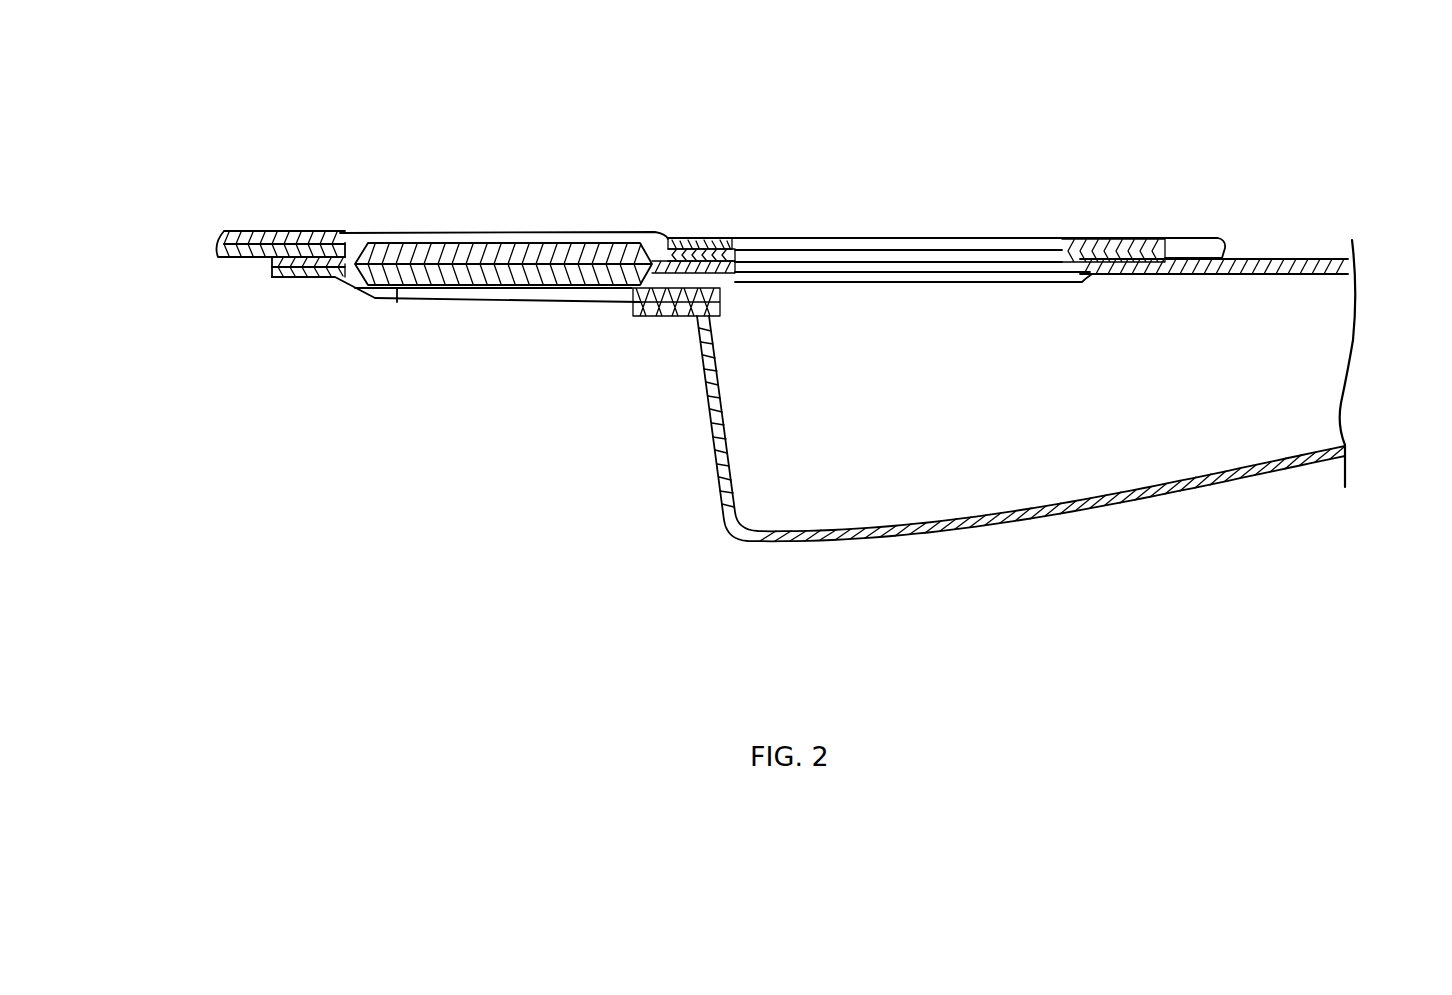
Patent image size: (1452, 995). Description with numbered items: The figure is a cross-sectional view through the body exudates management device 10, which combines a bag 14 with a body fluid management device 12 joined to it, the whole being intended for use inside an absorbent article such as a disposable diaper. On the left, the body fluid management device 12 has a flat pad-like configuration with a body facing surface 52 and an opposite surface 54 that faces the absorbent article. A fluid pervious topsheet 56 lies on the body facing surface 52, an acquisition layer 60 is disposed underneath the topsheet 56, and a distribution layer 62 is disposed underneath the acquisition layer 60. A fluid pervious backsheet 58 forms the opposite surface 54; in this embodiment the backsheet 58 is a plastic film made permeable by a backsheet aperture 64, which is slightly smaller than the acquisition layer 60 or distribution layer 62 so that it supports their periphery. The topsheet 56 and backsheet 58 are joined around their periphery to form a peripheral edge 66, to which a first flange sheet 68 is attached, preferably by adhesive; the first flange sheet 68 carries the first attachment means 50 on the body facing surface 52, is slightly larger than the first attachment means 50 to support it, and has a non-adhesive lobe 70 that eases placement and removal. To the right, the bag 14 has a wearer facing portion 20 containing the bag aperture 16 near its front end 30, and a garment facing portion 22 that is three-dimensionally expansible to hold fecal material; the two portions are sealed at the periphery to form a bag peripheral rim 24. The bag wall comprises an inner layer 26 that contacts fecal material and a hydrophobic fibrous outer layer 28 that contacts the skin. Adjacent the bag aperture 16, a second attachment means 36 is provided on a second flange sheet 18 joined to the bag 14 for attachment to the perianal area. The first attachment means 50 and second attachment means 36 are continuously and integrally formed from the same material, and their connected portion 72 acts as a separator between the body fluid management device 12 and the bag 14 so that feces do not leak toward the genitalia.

The body exudates management device 10 is at (660, 560).
The body fluid management device 12 is at (517, 165).
The bag 14 is at (1196, 178).
The bag aperture 16 is at (926, 233).
The second flange sheet 18 is at (763, 238).
The wearer facing portion 20 is at (1276, 236).
The garment facing portion 22 is at (1120, 532).
The bag peripheral rim 24 is at (642, 315).
The inner layer 26 is at (620, 317).
The outer layer 28 is at (612, 318).
The front end 30 is at (648, 318).
The second attachment means 36 is at (717, 238).
The first attachment means 50 is at (297, 238).
The body facing surface 52 is at (594, 222).
The opposite surface 54 is at (360, 312).
The fluid pervious topsheet 56 is at (415, 242).
The fluid pervious backsheet 58 is at (270, 270).
The acquisition layer 60 is at (462, 242).
The distribution layer 62 is at (425, 290).
The backsheet aperture 64 is at (493, 300).
The peripheral edge 66 is at (290, 278).
The first flange sheet 68 is at (218, 250).
The lobe 70 is at (248, 236).
The connected portion 72 is at (700, 240).